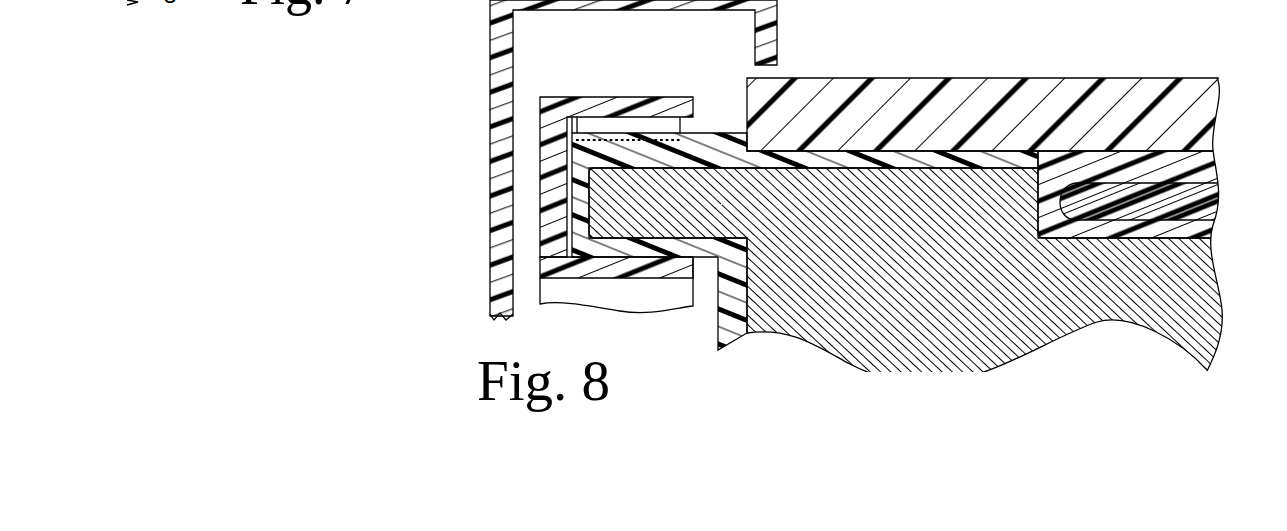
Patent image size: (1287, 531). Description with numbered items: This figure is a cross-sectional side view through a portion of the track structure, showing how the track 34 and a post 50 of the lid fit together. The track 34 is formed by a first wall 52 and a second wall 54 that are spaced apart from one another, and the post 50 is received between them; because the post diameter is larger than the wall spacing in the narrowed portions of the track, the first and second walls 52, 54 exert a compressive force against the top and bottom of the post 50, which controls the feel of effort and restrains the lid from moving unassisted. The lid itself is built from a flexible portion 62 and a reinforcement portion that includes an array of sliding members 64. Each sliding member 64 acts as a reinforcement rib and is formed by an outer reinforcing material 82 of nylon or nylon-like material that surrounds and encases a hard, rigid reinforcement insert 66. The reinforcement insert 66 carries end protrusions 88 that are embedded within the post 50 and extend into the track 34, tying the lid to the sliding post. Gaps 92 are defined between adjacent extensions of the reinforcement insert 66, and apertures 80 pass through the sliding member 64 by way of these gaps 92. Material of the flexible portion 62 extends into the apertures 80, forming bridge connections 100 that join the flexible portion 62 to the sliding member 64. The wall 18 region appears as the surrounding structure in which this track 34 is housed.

The housing wall 18 is at (490, 97).
The track 34 is at (538, 203).
The post 50 is at (713, 143).
The first wall 52 is at (635, 102).
The second wall 54 is at (650, 267).
The flexible portion 62 is at (1018, 78).
The sliding member 64 is at (800, 405).
The reinforcement insert 66 is at (887, 368).
The aperture 80 is at (1218, 193).
The outer reinforcing material 82 is at (732, 320).
The end protrusion 88 is at (608, 218).
The gap 92 is at (1040, 176).
The bridge connection 100 is at (1218, 212).